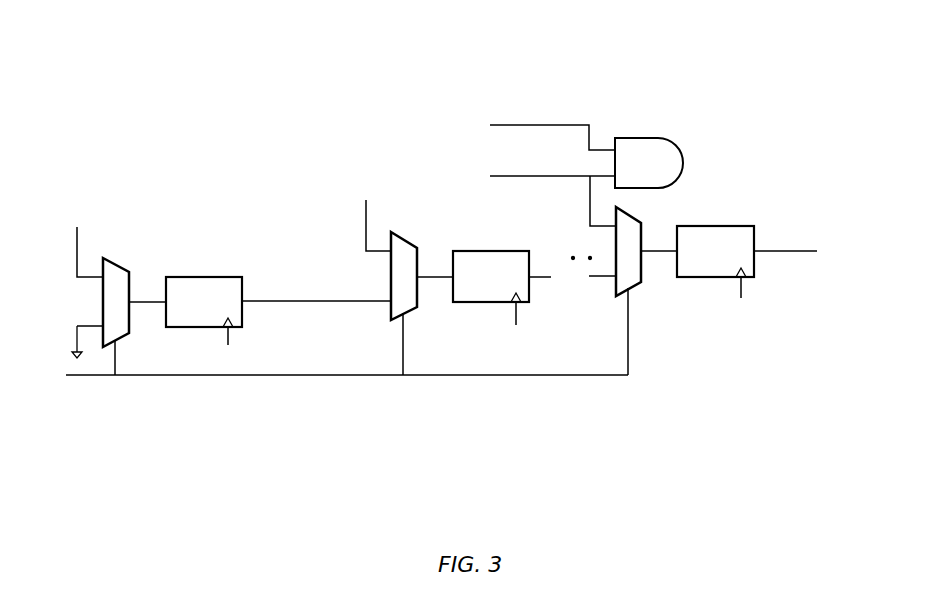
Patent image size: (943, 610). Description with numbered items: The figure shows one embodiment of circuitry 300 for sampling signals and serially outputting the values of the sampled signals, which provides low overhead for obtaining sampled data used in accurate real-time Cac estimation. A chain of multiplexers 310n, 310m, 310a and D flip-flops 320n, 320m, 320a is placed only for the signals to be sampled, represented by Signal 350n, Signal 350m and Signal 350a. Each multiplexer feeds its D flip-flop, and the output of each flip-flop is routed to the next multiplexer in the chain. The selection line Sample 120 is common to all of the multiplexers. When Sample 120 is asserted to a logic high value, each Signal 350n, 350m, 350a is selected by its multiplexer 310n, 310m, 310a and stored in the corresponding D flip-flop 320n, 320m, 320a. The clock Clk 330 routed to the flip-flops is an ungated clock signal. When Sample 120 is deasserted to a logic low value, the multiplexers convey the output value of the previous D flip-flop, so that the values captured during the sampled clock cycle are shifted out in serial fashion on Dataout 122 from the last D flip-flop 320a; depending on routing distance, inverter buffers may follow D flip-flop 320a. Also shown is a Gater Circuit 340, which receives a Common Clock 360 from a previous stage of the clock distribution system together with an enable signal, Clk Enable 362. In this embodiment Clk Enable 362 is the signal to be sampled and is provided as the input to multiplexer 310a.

The circuitry 300 is at (184, 44).
The Sample 120 is at (92, 377).
The Dataout 122 is at (778, 247).
The multiplexer 310n is at (118, 264).
The multiplexer 310m is at (405, 240).
The multiplexer 310a is at (632, 286).
The D flip-flop 320n is at (191, 328).
The D flip-flop 320m is at (480, 303).
The D flip-flop 320a is at (718, 226).
The Clk 330 is at (487, 323).
The Gater Circuit 340 is at (645, 188).
The Signal 350n is at (76, 250).
The Signal 350m is at (365, 208).
The Signal 350a is at (590, 209).
The Common Clock 360 is at (530, 125).
The Clk Enable 362 is at (523, 176).